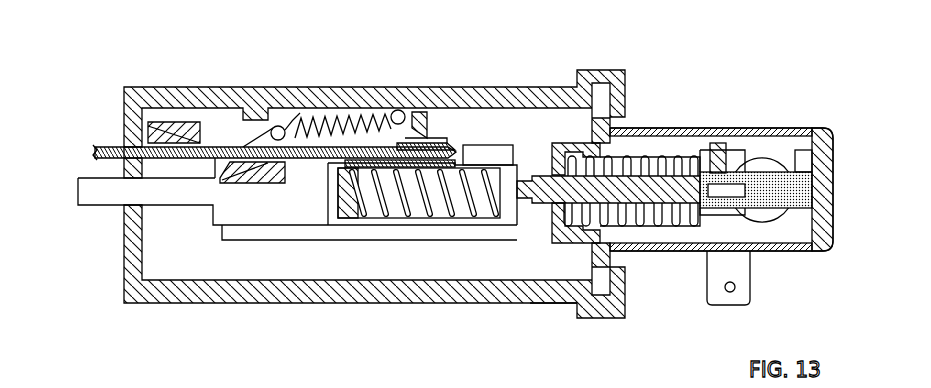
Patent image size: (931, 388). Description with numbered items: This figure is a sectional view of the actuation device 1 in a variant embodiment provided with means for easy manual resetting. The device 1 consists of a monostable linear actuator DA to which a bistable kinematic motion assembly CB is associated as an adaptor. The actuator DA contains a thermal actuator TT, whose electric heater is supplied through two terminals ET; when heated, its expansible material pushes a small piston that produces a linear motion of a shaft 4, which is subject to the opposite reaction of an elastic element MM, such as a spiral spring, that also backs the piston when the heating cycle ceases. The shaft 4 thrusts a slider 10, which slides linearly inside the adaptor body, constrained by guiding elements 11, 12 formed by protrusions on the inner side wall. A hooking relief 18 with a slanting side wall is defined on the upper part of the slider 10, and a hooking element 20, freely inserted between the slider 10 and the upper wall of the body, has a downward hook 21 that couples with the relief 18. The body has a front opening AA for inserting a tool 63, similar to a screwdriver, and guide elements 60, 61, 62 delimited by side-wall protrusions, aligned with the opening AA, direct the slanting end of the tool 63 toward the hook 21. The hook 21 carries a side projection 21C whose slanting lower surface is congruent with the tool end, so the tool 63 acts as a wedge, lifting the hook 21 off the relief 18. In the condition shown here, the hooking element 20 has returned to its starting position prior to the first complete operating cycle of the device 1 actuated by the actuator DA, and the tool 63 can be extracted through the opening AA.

The actuation device 1 is at (689, 78).
The slider 10 is at (205, 224).
The guiding element 11 is at (498, 236).
The guiding element 12 is at (505, 150).
The hooking relief 18 is at (440, 138).
The hooking element 20 is at (385, 140).
The hook 21 is at (433, 126).
The side projection 21C is at (413, 137).
The guide element 60 is at (183, 124).
The guide element 61 is at (263, 184).
The guide element 62 is at (342, 163).
The tool 63 is at (107, 149).
The shaft 4 is at (639, 218).
The opening AA is at (122, 145).
The bistable kinematic motion assembly CB is at (549, 312).
The linear actuator DA is at (839, 208).
The terminals ET is at (745, 300).
The elastic element MM is at (668, 227).
The thermal actuator TT is at (802, 158).